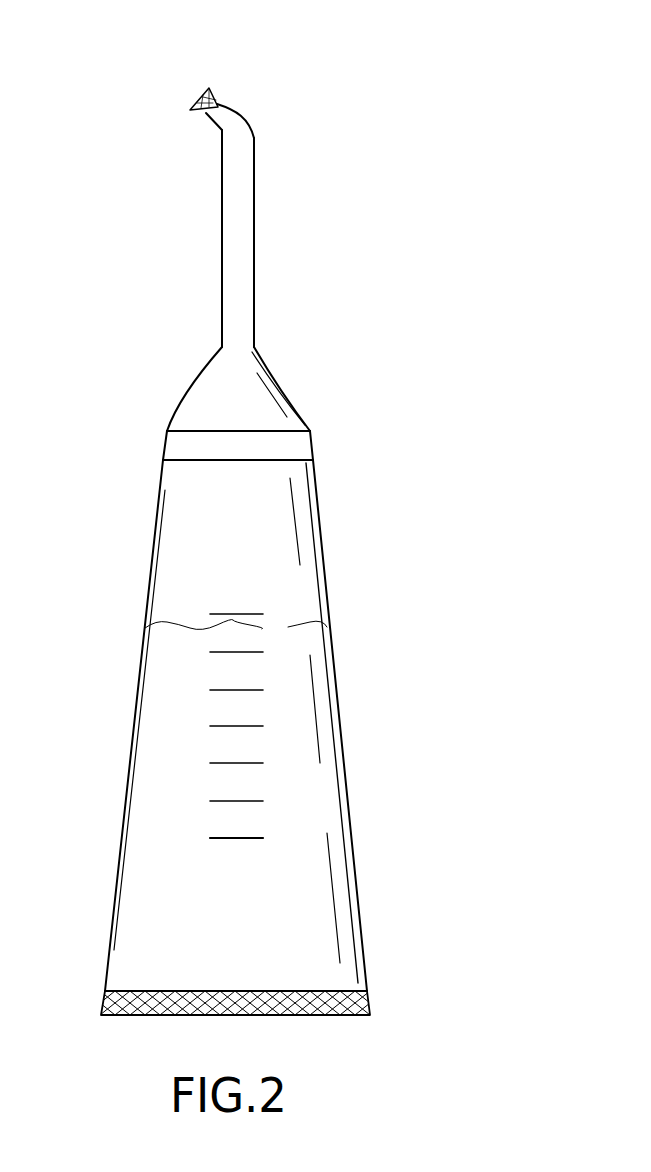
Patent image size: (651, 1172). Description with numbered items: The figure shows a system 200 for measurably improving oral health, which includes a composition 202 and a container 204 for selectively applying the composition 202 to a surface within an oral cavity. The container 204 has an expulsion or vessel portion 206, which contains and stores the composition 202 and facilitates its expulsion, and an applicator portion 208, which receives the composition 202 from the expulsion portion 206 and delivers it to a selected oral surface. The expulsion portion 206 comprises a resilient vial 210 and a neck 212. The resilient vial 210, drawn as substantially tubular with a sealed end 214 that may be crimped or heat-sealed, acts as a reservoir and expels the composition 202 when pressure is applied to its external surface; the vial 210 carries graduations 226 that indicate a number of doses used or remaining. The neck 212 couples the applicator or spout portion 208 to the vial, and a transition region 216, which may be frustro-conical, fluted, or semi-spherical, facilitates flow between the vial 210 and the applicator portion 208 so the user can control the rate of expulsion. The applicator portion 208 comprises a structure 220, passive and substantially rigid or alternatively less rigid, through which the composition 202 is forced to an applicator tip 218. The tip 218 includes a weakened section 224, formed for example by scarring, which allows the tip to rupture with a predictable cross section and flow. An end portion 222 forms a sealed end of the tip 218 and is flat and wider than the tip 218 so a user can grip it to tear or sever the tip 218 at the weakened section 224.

The system 200 is at (404, 289).
The composition 202 is at (275, 628).
The container 204 is at (336, 656).
The expulsion or vessel portion 206 is at (411, 841).
The applicator portion 208 is at (268, 126).
The resilient vial 210 is at (122, 825).
The neck 212 is at (149, 447).
The sealed end 214 is at (350, 1012).
The transition region 216 is at (287, 383).
The applicator tip 218 is at (214, 128).
The structure 220 is at (257, 245).
The end portion 222 is at (192, 99).
The weakened section 224 is at (218, 97).
The graduations 226 is at (257, 833).